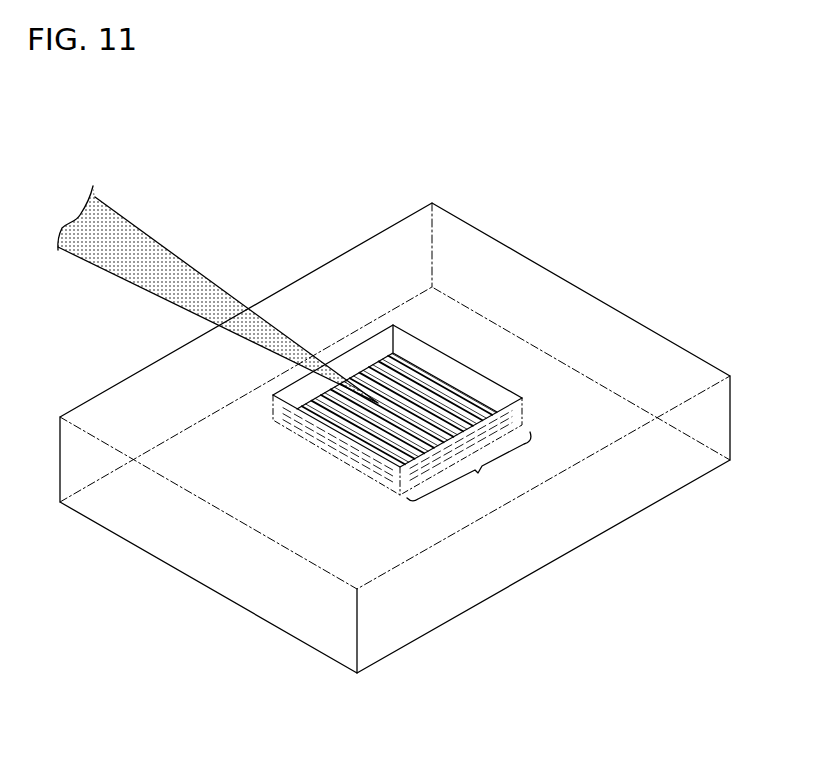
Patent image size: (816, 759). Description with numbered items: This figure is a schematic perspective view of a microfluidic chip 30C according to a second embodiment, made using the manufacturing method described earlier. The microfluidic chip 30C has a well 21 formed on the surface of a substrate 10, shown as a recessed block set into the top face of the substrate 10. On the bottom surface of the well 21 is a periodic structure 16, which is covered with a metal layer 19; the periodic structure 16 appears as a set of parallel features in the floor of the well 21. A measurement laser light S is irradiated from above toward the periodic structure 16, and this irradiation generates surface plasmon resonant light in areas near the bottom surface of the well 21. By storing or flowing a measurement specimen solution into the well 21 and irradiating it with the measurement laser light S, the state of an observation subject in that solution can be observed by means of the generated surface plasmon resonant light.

The microfluidic chip 30C is at (552, 183).
The substrate 10 is at (687, 365).
The well 21 is at (423, 340).
The metal layer 19 is at (357, 450).
The periodic structure 16 is at (469, 469).
The measurement laser light S is at (178, 270).